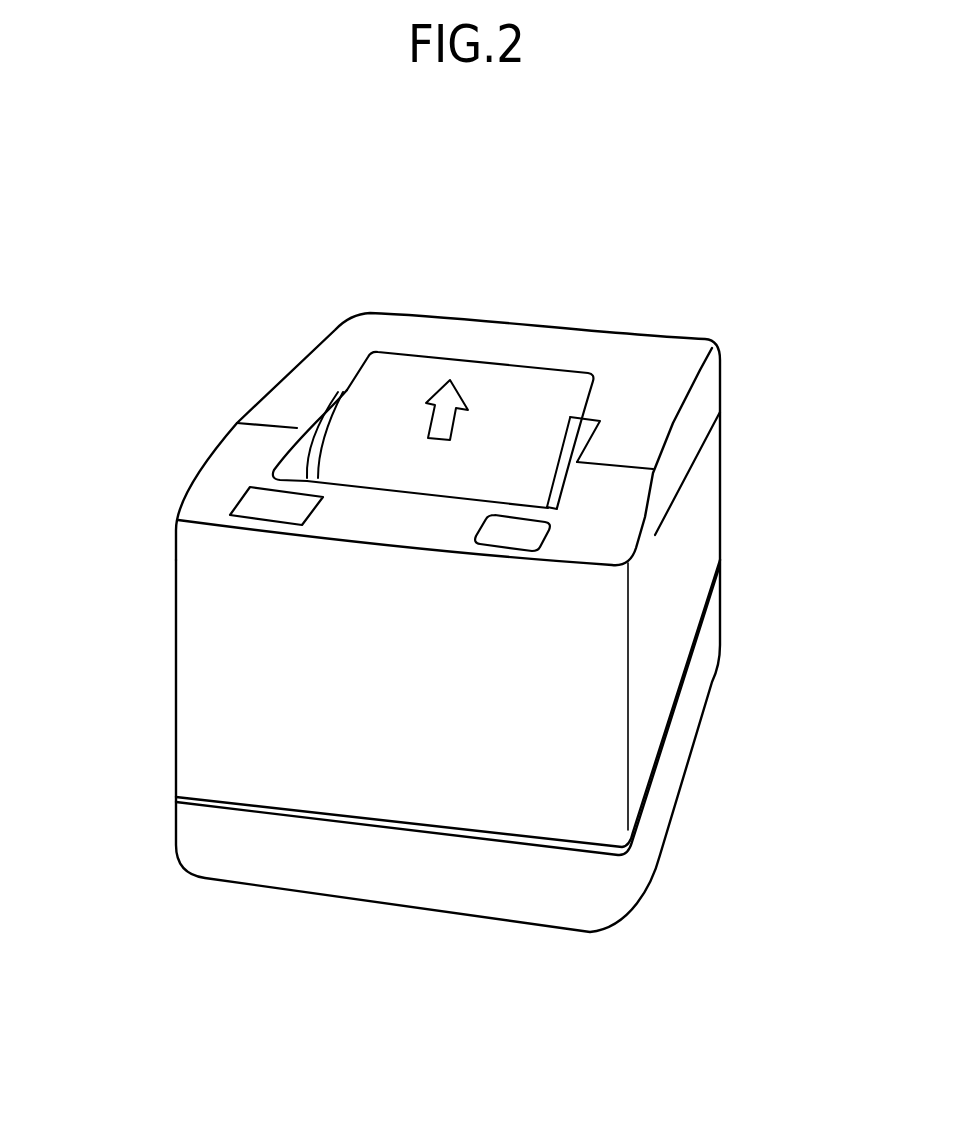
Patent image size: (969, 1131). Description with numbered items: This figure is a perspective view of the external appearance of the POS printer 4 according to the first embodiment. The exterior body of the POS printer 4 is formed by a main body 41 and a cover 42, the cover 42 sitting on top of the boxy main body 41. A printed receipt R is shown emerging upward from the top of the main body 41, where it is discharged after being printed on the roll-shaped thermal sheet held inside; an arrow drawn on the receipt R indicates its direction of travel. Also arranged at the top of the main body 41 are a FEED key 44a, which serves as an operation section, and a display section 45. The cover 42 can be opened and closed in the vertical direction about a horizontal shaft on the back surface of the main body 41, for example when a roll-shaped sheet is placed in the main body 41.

The POS printer 4 is at (890, 234).
The main body 41 is at (175, 702).
The cover 42 is at (707, 390).
The FEED key 44a is at (532, 535).
The display section 45 is at (240, 503).
The receipt R is at (365, 405).